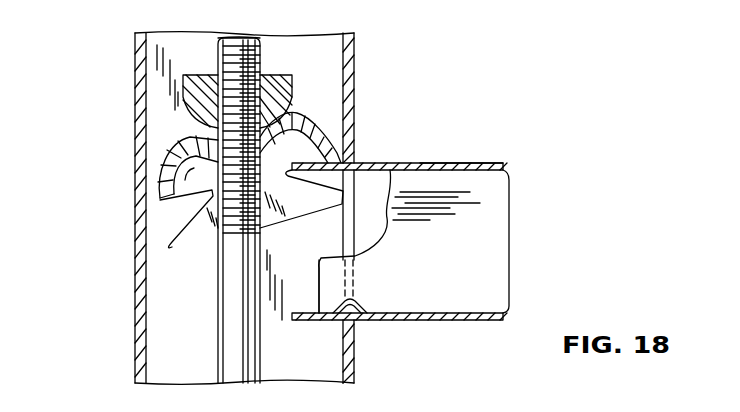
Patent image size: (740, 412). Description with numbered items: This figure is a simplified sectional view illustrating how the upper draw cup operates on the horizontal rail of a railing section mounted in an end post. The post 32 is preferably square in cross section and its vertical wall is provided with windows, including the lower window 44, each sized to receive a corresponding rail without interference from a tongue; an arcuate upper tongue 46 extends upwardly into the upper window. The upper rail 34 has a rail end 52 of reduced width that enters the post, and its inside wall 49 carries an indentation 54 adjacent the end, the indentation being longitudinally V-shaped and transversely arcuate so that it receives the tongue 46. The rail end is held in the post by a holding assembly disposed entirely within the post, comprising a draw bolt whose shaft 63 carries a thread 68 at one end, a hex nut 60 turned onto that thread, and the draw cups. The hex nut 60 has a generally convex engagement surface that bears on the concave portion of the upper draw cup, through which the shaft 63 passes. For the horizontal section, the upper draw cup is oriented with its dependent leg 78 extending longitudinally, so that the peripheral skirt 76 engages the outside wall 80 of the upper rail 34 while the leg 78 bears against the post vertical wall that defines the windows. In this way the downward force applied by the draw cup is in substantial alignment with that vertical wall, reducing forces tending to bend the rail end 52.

The post 32 is at (135, 177).
The arcuate upper tongue 46 is at (355, 93).
The shaft 63 is at (232, 343).
The hex nut 60 is at (292, 74).
The thread 68 is at (218, 57).
The peripheral skirt 76 is at (323, 141).
The dependent leg 78 is at (180, 240).
The lower window 44 is at (348, 202).
The upper rail 34 is at (497, 163).
The outside wall 80 is at (467, 163).
The inside wall 49 is at (465, 322).
The indentation 54 is at (352, 302).
The rail end 52 is at (303, 325).